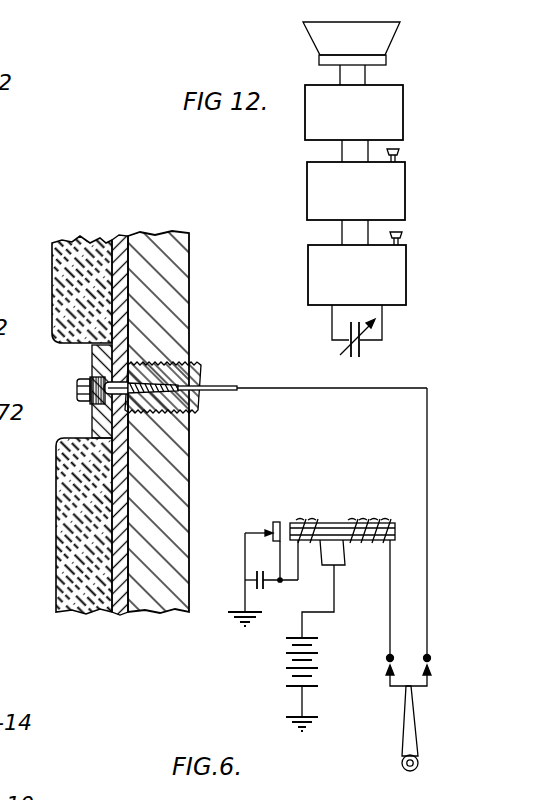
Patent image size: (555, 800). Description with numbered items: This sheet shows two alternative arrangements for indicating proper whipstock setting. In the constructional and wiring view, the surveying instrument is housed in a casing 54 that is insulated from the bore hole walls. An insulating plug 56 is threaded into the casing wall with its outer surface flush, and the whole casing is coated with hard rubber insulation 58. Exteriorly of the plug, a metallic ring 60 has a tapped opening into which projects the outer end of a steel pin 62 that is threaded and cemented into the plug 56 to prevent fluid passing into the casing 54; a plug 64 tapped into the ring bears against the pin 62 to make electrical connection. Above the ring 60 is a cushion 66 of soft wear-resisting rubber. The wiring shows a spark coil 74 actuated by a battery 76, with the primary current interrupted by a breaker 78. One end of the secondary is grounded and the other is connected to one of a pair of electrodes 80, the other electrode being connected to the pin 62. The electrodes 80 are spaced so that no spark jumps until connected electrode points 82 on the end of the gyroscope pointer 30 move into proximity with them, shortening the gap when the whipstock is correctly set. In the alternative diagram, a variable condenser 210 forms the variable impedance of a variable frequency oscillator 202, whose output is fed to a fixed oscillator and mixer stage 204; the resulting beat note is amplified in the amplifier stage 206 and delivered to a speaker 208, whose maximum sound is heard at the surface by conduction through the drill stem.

In FIG. 12, the speaker 208 is at (394, 40).
In FIG. 12, the amplifier stage 206 is at (404, 116).
In FIG. 12, the fixed oscillator and mixer stage 204 is at (405, 190).
In FIG. 12, the variable frequency oscillator 202 is at (407, 268).
In FIG. 12, the variable condenser 210 is at (363, 345).
In FIG. 6, the casing 54 is at (188, 268).
In FIG. 6, the hard rubber insulation 58 is at (122, 238).
In FIG. 6, the cushion 66 is at (78, 236).
In FIG. 6, the metallic ring 60 is at (92, 416).
In FIG. 6, the insulating plug 56 is at (199, 364).
In FIG. 6, the steel pin 62 is at (212, 392).
In FIG. 6, the plug 64 is at (85, 382).
In FIG. 6, the spark coil 74 is at (358, 521).
In FIG. 6, the breaker 78 is at (278, 521).
In FIG. 6, the battery 76 is at (289, 659).
In FIG. 6, the electrodes 80 is at (392, 655).
In FIG. 6, the electrode points 82 is at (388, 678).
In FIG. 6, the pointer 30 is at (418, 734).